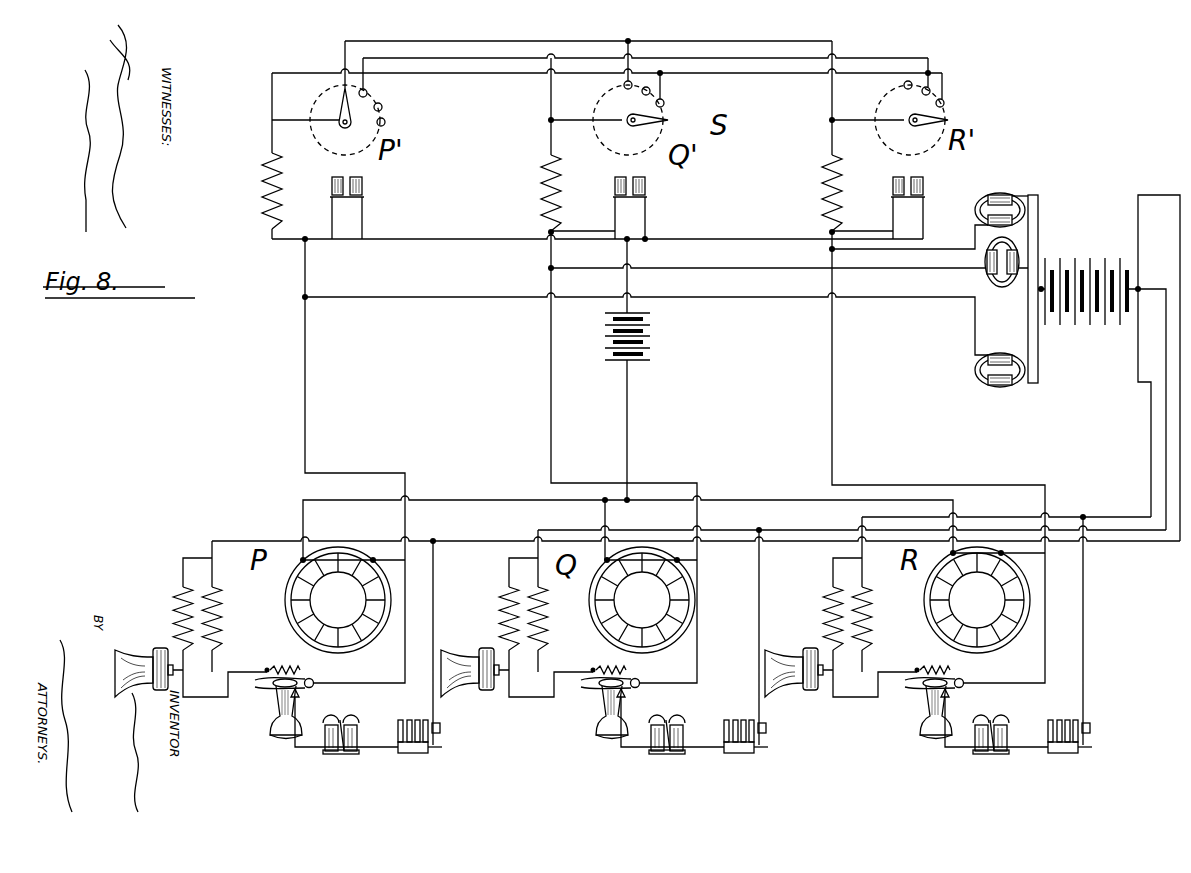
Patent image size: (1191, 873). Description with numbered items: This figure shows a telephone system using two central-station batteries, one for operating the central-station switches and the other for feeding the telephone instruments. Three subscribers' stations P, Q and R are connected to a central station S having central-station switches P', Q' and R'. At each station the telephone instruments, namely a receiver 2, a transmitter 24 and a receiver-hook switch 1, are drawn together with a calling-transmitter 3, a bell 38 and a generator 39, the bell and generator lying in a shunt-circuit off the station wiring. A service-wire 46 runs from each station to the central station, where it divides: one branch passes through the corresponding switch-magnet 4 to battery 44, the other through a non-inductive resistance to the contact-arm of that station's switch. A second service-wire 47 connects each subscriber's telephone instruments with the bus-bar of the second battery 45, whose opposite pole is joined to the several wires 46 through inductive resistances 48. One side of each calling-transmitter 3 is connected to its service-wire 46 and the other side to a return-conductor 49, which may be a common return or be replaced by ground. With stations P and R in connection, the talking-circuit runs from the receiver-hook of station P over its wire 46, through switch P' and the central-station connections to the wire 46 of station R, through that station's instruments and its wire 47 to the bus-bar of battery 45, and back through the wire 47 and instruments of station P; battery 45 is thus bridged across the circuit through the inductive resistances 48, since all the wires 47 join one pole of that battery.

The switch hook lever 1 is at (289, 690).
The telephone receiver 2 is at (266, 699).
The calling-transmitter 3 is at (318, 609).
The relay 4 is at (637, 208).
The signal bell horn 24 is at (156, 652).
The bell 38 is at (364, 754).
The generator 39 is at (745, 748).
The central-station battery 44 is at (649, 369).
The central-station battery 45 is at (1089, 278).
The service-wire 46 is at (312, 430).
The service-wire 47 is at (460, 540).
The inductive resistance 48 is at (1002, 402).
The return-conductor 49 is at (497, 500).